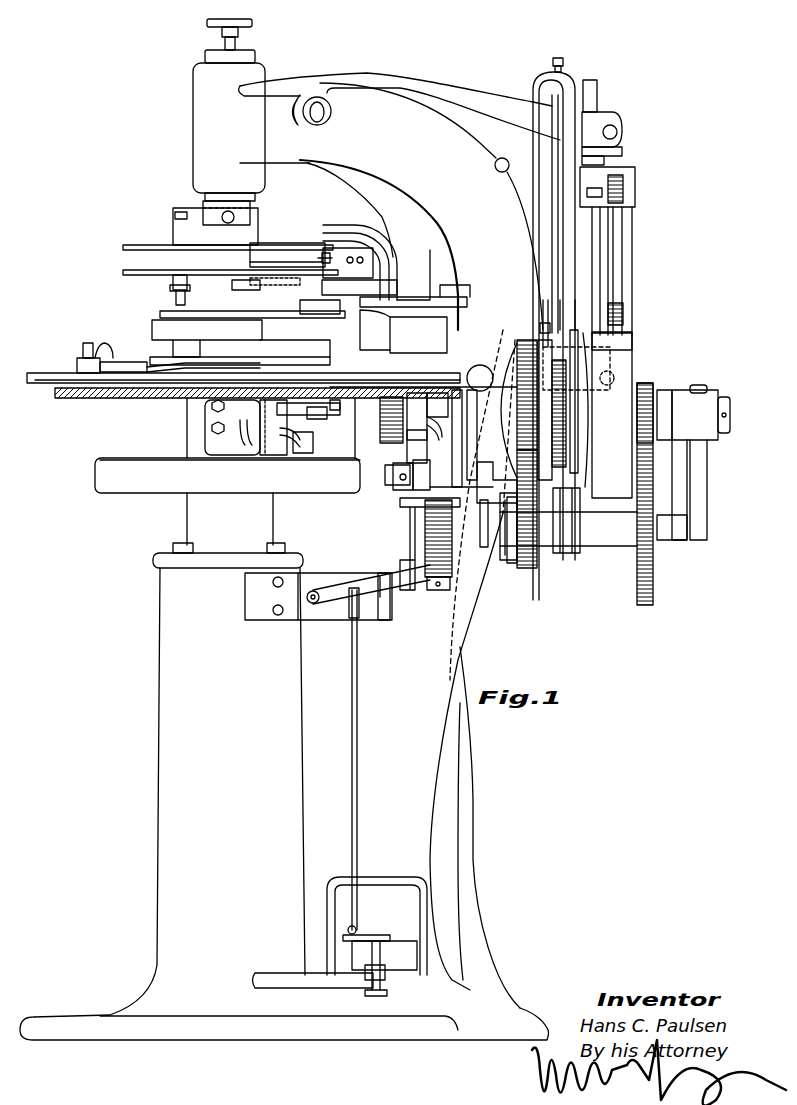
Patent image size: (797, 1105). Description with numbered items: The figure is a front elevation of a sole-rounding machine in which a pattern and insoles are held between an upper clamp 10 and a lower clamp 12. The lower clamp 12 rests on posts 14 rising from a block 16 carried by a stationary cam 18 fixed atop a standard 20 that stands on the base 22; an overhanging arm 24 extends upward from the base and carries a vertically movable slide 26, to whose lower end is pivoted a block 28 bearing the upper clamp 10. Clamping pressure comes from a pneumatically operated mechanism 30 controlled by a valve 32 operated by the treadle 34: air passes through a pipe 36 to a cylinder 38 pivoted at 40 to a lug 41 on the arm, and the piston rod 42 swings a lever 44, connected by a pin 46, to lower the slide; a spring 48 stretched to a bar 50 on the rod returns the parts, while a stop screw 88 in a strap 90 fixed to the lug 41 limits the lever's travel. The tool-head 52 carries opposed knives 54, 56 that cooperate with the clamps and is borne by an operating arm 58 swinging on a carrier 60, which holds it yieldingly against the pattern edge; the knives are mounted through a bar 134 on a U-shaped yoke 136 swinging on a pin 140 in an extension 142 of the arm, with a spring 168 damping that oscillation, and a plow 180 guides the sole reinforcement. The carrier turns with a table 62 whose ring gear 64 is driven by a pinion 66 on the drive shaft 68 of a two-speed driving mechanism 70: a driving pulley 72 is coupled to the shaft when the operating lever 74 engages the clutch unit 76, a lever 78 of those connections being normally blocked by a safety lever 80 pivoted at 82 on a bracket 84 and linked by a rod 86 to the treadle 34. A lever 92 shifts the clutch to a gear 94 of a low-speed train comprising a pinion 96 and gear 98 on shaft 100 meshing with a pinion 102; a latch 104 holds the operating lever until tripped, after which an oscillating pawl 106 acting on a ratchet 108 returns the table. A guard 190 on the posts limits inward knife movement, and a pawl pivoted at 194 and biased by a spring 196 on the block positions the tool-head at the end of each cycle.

The upper clamp 10 is at (145, 247).
The lower clamp 12 is at (145, 272).
The posts 14 is at (172, 294).
The block 16 is at (175, 312).
The stationary cam 18 is at (155, 330).
The standard 20 is at (187, 530).
The base 22 is at (172, 768).
The overhanging arm 24 is at (400, 104).
The slide 26 is at (210, 200).
The block 28 is at (180, 233).
The pneumatically operated mechanism 30 is at (658, 203).
The valve 32 is at (378, 993).
The treadle 34 is at (430, 985).
The pipe 36 is at (470, 782).
The cylinder 38 is at (633, 252).
The pivot 40 is at (615, 378).
The lug 41 is at (640, 345).
The rod 42 is at (598, 96).
The lever 44 is at (478, 100).
The pin 46 is at (612, 132).
The spring 48 is at (625, 315).
The bar 50 is at (624, 152).
The tool-head 52 is at (433, 209).
The knife 54 is at (323, 256).
The knife 56 is at (310, 262).
The operating arm 58 is at (397, 298).
The carrier 60 is at (440, 340).
The table 62 is at (38, 373).
The ring gear 64 is at (70, 397).
The pinion 66 is at (380, 420).
The drive shaft 68 is at (725, 417).
The two-speed driving mechanism 70 is at (583, 560).
The driving pulley 72 is at (605, 500).
The operating lever 74 is at (488, 365).
The clutch unit 76 is at (578, 430).
The lever 78 is at (440, 590).
The safety lever 80 is at (408, 582).
The pivot 82 is at (316, 605).
The bracket 84 is at (250, 600).
The rod 86 is at (352, 690).
The stop screw 88 is at (558, 64).
The strap 90 is at (570, 80).
The lever 92 is at (385, 430).
The gear 94 is at (527, 335).
The pinion 96 is at (527, 568).
The gear 98 is at (648, 605).
The shaft 100 is at (632, 540).
The pinion 102 is at (655, 393).
The latch 104 is at (474, 368).
The oscillating pawl 106 is at (565, 340).
The ratchet 108 is at (570, 410).
The bar 134 is at (345, 245).
The U-shaped yoke 136 is at (405, 207).
The pin 140 is at (300, 305).
The extension 142 is at (382, 207).
The spring 168 is at (372, 284).
The plow 180 is at (300, 242).
The guard 190 is at (232, 286).
The pivot 194 is at (275, 300).
The spring 196 is at (225, 325).